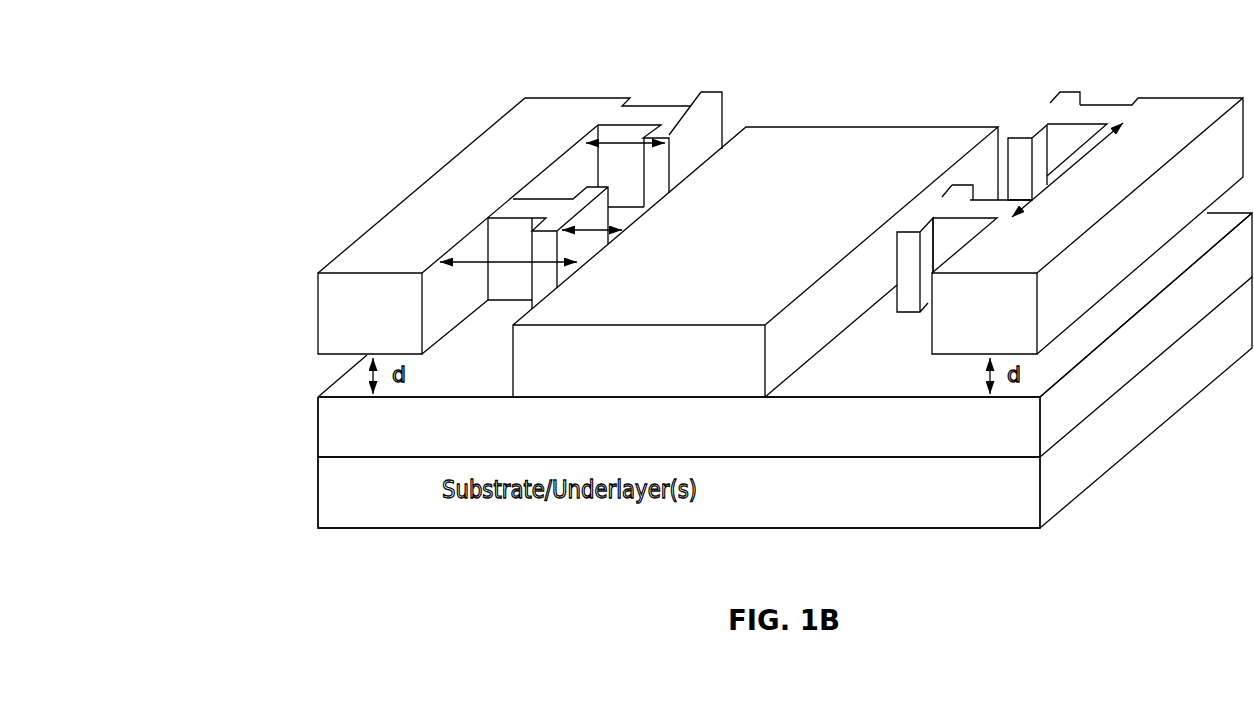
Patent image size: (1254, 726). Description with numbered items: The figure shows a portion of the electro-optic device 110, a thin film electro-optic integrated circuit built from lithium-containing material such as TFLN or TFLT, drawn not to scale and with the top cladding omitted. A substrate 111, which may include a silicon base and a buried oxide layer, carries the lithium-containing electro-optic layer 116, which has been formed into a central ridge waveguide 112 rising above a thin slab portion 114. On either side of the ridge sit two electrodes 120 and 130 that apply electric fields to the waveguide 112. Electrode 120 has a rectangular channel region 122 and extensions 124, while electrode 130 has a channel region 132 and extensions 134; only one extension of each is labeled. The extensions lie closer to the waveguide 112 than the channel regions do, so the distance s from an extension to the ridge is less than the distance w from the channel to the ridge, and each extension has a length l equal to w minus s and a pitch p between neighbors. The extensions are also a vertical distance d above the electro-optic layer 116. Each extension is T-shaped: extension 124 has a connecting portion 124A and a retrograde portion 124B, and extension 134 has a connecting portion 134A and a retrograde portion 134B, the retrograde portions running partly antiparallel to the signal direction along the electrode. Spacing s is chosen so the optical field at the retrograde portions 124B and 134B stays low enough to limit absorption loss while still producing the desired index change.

The electro-optic device 110 is at (425, 53).
The substrate 111 is at (913, 503).
The ridge waveguide 112 is at (706, 388).
The slab portion 114 is at (371, 470).
The lithium-containing electro-optic layer 116 is at (658, 435).
The electrode 120 is at (1060, 193).
The channel region 122 is at (1002, 325).
The extensions 124 is at (999, 124).
The connecting portion 124A is at (1005, 87).
The retrograde portion 124B is at (1015, 121).
The electrode 130 is at (586, 194).
The channel region 132 is at (370, 313).
The extensions 134 is at (647, 172).
The connecting portion 134A is at (646, 113).
The retrograde portion 134B is at (726, 113).